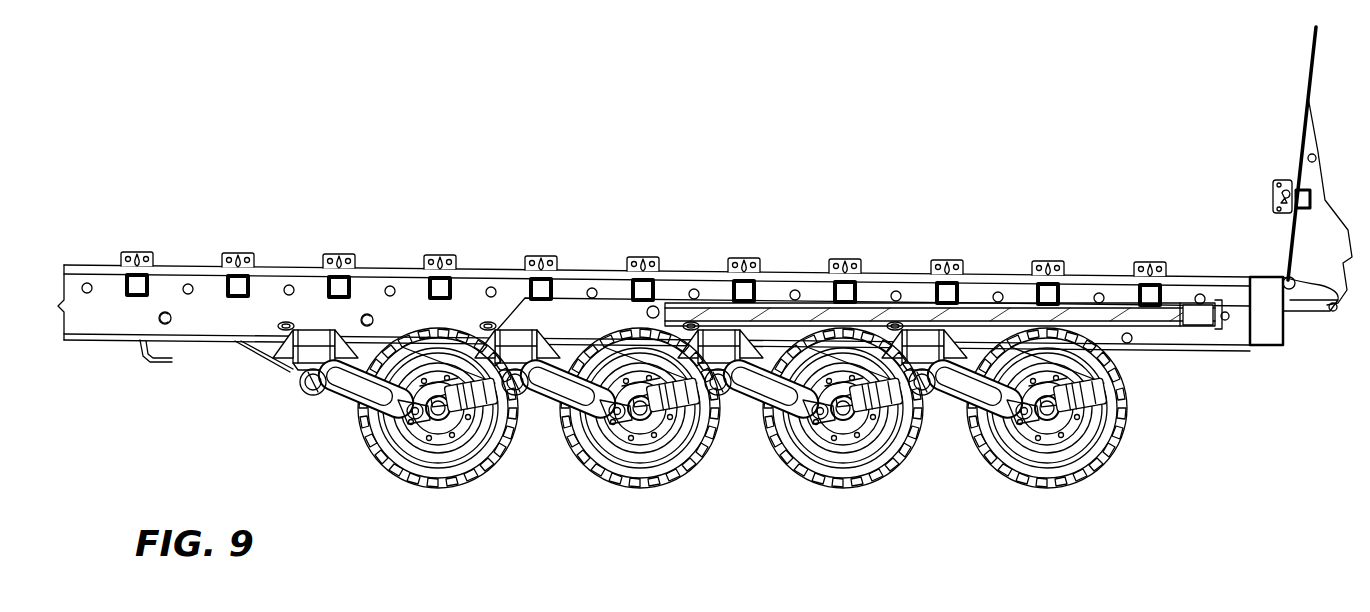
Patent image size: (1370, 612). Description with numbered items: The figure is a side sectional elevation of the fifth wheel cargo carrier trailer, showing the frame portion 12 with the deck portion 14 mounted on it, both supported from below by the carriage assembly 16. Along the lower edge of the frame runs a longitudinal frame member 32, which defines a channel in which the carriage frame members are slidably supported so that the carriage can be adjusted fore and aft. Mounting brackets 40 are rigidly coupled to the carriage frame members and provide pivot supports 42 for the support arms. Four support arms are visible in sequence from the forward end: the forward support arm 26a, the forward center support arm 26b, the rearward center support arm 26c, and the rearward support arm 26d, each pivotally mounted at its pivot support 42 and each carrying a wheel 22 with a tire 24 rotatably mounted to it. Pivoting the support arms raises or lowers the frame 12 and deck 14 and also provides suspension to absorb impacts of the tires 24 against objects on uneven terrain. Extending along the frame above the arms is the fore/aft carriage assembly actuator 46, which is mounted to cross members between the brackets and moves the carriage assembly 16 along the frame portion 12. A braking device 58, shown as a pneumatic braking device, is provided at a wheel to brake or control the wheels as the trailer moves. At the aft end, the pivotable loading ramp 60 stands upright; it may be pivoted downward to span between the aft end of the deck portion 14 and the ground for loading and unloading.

The frame portion 12 is at (114, 318).
The deck portion 14 is at (646, 224).
The carriage assembly 16 is at (340, 510).
The wheels 22 is at (395, 470).
The tires 24 is at (475, 485).
The forward support arms 26a is at (343, 403).
The forward center support arms 26b is at (548, 420).
The rearward center support arms 26c is at (752, 420).
The rearward support arms 26d is at (958, 420).
The longitudinal frame member 32 is at (224, 325).
The mounting brackets 40 is at (290, 378).
The pivot supports 42 is at (305, 395).
The fore/aft carriage assembly actuator 46 is at (932, 312).
The braking device 58 is at (1100, 402).
The pivotable loading ramp 60 is at (1297, 152).